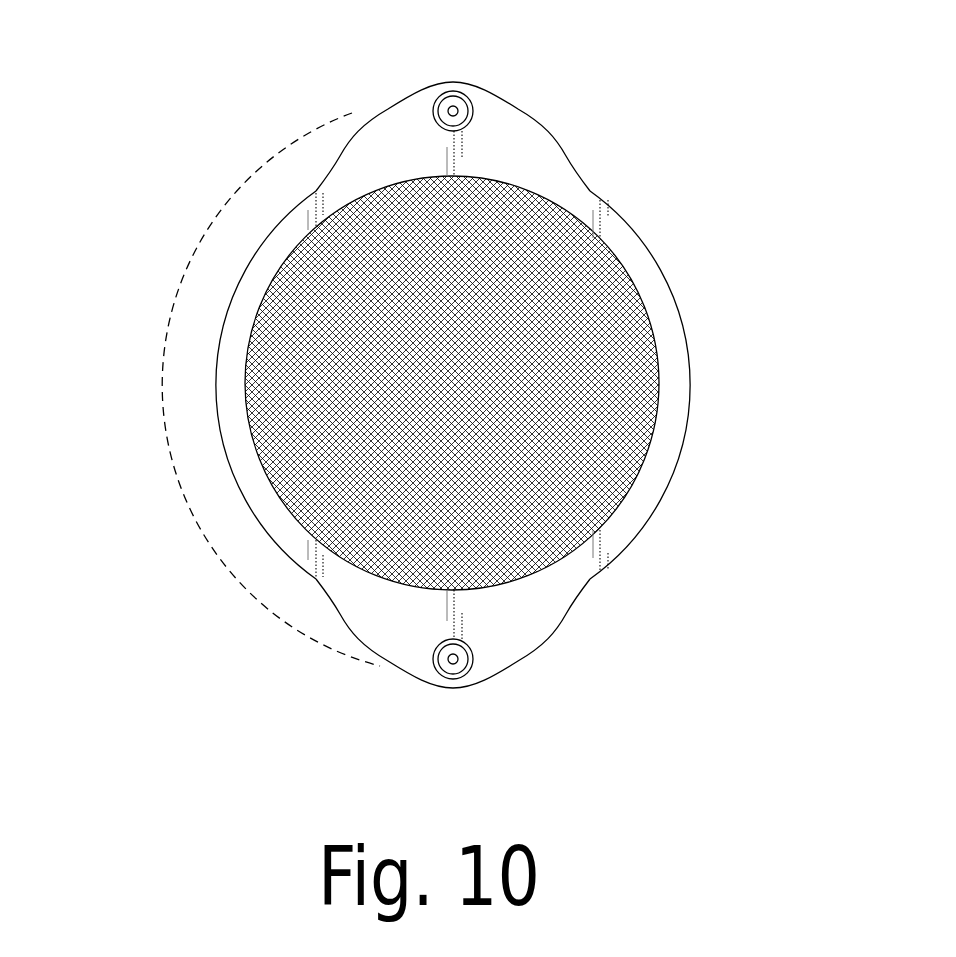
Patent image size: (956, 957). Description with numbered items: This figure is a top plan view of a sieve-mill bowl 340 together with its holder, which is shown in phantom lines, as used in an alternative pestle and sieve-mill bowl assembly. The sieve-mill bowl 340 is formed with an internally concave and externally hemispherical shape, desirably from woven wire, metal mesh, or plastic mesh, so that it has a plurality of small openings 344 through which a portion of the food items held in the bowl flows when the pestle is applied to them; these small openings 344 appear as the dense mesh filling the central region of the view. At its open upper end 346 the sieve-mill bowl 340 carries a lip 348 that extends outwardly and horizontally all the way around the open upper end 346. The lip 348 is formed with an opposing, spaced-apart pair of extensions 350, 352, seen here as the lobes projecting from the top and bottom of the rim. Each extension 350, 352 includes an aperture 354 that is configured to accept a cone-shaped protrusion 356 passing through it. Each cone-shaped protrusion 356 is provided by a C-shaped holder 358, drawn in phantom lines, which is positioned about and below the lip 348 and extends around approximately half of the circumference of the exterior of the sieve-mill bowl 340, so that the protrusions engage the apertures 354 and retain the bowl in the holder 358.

The sieve-mill bowl 340 is at (512, 372).
The small openings 344 is at (565, 405).
The open upper end 346 is at (683, 450).
The lip 348 is at (632, 517).
The extension 350 is at (485, 97).
The extension 352 is at (517, 627).
The aperture 354 is at (436, 121).
The cone-shaped protrusion 356 is at (458, 113).
The C-shaped holder 358 is at (180, 403).